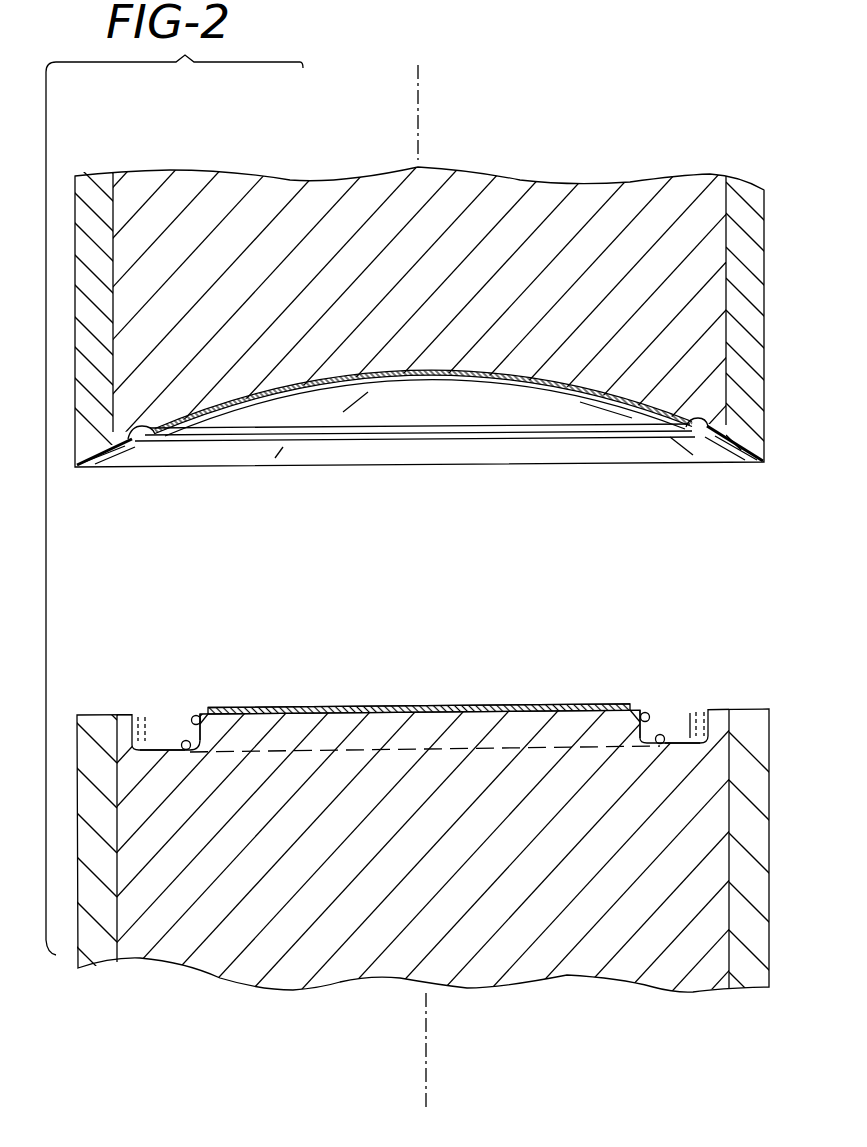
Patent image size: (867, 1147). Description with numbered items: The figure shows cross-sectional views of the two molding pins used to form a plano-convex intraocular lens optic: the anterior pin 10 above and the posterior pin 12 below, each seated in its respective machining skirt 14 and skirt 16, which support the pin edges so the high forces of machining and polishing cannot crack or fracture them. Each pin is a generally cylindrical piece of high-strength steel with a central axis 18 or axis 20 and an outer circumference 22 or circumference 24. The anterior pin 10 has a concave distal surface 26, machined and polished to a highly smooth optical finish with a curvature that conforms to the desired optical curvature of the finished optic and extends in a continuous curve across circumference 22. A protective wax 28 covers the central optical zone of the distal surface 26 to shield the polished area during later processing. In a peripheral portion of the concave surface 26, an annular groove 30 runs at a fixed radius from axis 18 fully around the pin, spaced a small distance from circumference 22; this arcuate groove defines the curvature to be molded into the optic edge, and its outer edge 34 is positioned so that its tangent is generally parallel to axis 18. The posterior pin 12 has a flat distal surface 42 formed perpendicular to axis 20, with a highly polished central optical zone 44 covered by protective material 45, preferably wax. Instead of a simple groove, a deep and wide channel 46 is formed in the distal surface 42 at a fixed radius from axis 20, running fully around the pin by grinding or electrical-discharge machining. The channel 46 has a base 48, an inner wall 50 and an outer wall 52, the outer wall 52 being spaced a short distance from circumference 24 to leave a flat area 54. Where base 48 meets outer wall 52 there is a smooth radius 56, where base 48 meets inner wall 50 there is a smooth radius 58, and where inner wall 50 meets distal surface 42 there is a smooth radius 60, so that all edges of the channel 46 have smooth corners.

The anterior molding pin 10 is at (590, 198).
The posterior molding pin 12 is at (535, 965).
The machining skirt 14 is at (107, 185).
The machining skirt 16 is at (94, 718).
The axis 18 is at (420, 82).
The axis 20 is at (428, 1083).
The circumference 22 is at (115, 175).
The circumference 24 is at (118, 958).
The concave distal surface 26 is at (545, 390).
The protective wax 28 is at (430, 380).
The annular groove 30 is at (147, 445).
The outer edge of groove 34 is at (135, 440).
The distal surface 42 is at (173, 725).
The optical zone 44 is at (428, 698).
The protective material 45 is at (343, 705).
The channel 46 is at (681, 715).
The base of channel 48 is at (185, 740).
The inner wall of channel 50 is at (197, 715).
The outer wall of channel 52 is at (145, 728).
The flat area 54 is at (118, 714).
The smooth radius 56 is at (148, 745).
The smooth radius 58 is at (185, 748).
The smooth radius 60 is at (195, 727).